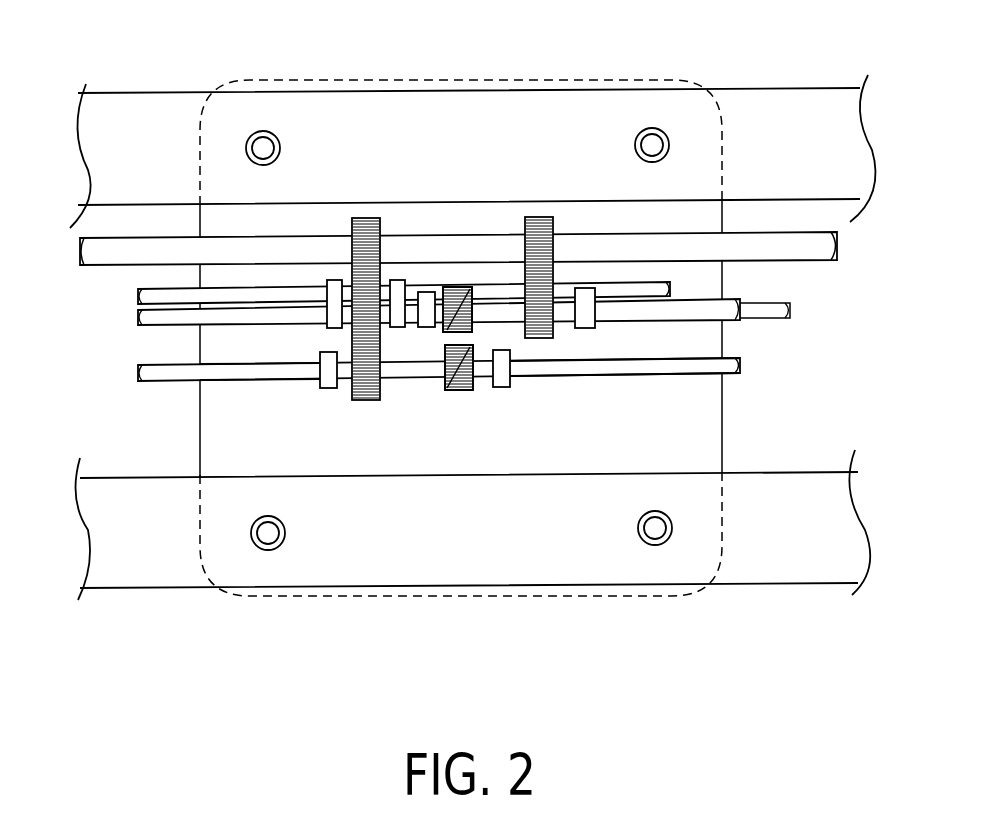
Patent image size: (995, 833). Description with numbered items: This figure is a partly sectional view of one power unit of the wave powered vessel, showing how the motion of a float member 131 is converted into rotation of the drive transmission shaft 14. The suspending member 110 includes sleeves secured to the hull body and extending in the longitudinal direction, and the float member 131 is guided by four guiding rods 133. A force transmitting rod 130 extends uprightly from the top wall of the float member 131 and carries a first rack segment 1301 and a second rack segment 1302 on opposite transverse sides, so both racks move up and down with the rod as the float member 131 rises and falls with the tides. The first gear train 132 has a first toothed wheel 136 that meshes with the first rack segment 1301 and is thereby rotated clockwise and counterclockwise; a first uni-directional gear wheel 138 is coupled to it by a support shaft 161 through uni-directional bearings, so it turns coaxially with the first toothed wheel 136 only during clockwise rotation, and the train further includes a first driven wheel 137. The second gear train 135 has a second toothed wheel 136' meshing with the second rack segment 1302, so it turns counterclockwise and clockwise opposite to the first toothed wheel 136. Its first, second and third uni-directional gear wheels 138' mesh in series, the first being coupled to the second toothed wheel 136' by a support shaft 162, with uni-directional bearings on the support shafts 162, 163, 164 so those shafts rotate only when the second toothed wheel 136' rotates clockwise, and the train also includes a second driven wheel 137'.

The suspending member 110 is at (767, 608).
The float member 131 is at (732, 420).
The guiding rods 133 is at (707, 44).
The drive transmission shaft 14 is at (823, 297).
The support shaft 161 is at (728, 310).
The support shaft 164 is at (137, 295).
The support shaft 163 is at (155, 323).
The support shaft 162 is at (413, 380).
The second gear train 135 is at (263, 412).
The first gear train 132 is at (657, 430).
The second uni-directional gear wheels 138' is at (376, 301).
The first uni-directional gear wheel 138 is at (621, 323).
The second driven wheel 137' is at (345, 253).
The first driven wheel 137 is at (553, 222).
The force transmitting rod 130 is at (472, 338).
The first toothed wheel 136 is at (450, 242).
The second toothed wheel 136' is at (487, 403).
The first rack segment 1301 is at (473, 287).
The second rack segment 1302 is at (452, 490).